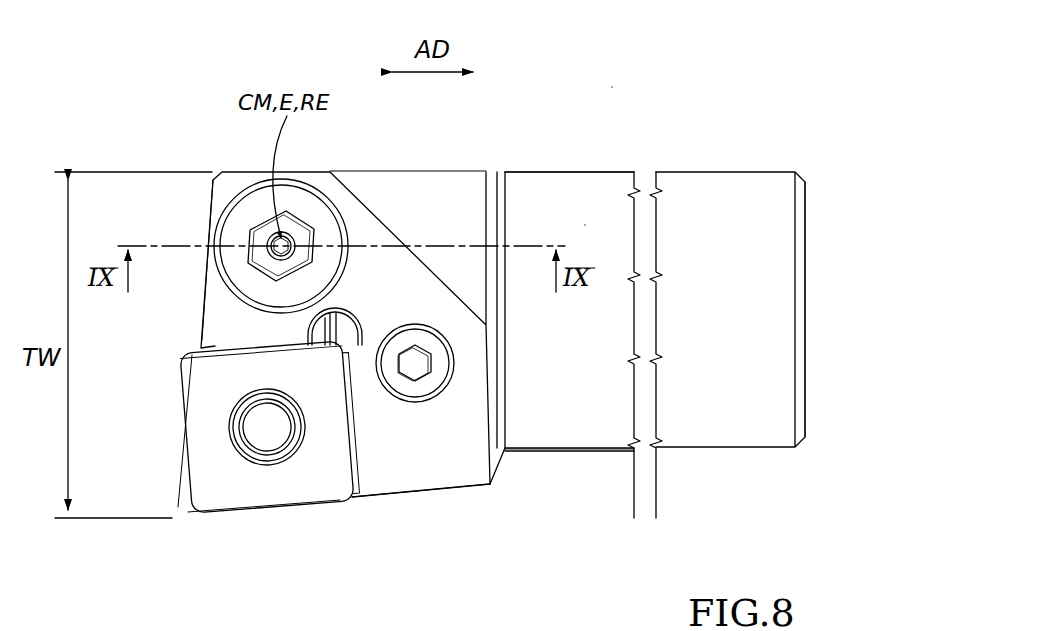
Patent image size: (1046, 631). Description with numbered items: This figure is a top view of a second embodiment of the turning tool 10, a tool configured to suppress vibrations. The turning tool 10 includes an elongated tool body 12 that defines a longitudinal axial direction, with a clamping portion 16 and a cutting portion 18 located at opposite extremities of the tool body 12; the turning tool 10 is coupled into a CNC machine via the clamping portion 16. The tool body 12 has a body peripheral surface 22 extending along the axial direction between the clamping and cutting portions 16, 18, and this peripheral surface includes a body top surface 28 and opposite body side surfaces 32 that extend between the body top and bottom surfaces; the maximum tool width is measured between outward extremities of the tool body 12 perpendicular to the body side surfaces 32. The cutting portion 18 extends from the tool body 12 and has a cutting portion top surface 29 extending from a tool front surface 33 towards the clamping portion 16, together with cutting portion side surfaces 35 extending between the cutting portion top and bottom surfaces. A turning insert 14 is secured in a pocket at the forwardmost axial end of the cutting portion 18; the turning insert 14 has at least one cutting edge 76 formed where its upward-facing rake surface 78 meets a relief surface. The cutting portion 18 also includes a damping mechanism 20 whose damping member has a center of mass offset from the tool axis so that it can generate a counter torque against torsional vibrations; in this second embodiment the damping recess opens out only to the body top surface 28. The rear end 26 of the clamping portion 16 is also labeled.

The turning tool 10 is at (612, 85).
The tool body 12 is at (607, 150).
The turning insert 14 is at (300, 530).
The clamping portion 16 is at (735, 163).
The cutting portion 18 is at (450, 160).
The damping mechanism 20 is at (233, 162).
The body peripheral surface 22 is at (589, 223).
The rear end 26 is at (805, 340).
The body top surface 28 is at (567, 436).
The cutting portion top surface 29 is at (455, 475).
The body side surfaces 32 is at (550, 172).
The tool front surface 33 is at (203, 307).
The cutting portion side surfaces 35 is at (365, 172).
The cutting edge 76 is at (210, 518).
The rake surface 78 is at (203, 445).